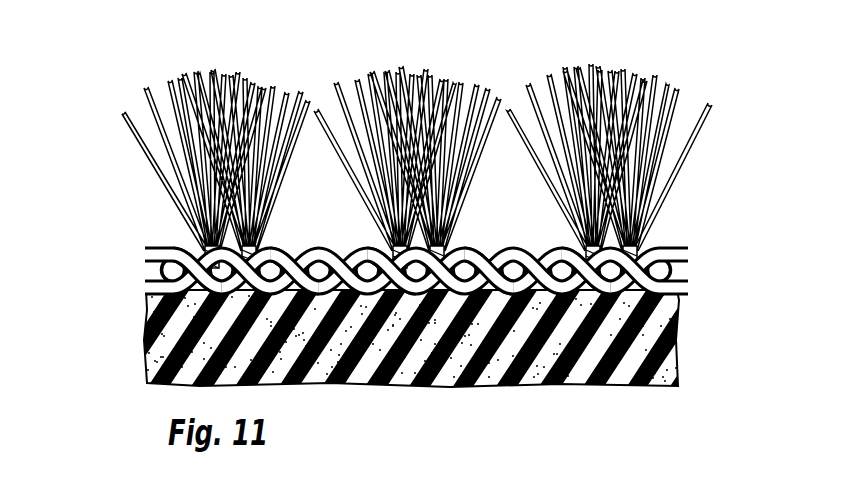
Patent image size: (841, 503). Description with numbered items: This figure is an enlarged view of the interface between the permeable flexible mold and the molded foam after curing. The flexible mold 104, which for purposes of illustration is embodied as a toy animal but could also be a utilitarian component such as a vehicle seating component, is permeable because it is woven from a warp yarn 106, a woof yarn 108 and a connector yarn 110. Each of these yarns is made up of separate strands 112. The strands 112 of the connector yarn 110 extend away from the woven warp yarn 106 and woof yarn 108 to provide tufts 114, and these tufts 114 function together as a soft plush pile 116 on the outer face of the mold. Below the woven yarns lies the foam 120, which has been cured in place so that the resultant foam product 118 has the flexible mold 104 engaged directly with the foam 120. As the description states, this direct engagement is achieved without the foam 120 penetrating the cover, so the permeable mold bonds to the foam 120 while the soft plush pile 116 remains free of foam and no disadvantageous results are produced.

The flexible mold 104 is at (420, 322).
The warp yarn 106 is at (563, 272).
The woof yarn 108 is at (668, 359).
The connector yarn 110 is at (638, 236).
The strands 112 is at (627, 181).
The tufts 114 is at (585, 229).
The soft plush pile 116 is at (712, 126).
The foam product 118 is at (710, 250).
The foam 120 is at (408, 337).